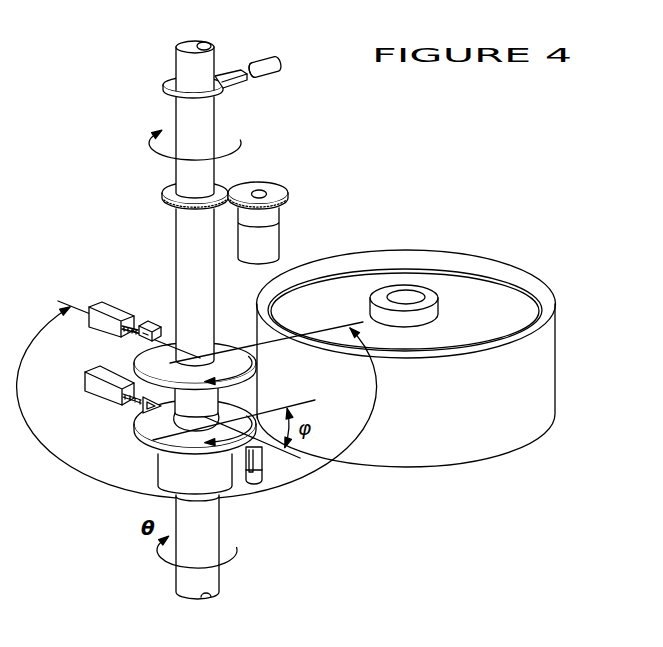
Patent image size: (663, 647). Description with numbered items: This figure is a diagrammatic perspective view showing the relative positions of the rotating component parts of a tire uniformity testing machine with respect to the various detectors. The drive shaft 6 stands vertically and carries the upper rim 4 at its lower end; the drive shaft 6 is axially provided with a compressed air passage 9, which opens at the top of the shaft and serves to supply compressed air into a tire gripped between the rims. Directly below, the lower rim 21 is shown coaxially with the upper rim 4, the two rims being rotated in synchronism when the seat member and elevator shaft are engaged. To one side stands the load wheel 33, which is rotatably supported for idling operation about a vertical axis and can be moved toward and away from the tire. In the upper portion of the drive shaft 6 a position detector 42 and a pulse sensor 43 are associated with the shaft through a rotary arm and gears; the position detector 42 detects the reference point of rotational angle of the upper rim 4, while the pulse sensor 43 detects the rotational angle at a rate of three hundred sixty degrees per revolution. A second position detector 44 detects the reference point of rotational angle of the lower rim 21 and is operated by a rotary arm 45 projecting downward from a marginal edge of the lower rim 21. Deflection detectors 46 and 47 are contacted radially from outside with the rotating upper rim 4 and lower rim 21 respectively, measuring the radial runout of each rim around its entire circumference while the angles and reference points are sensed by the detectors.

The upper rim 4 is at (125, 355).
The drive shaft 6 is at (173, 262).
The compressed air passage 9 is at (202, 42).
The lower rim 21 is at (138, 440).
The load wheel 33 is at (410, 250).
The position detector 42 is at (267, 58).
The pulse sensor 43 is at (280, 243).
The position detector 44 is at (255, 490).
The rotary arm 45 is at (258, 462).
The deflection detector 46 is at (95, 300).
The deflection detector 47 is at (98, 398).